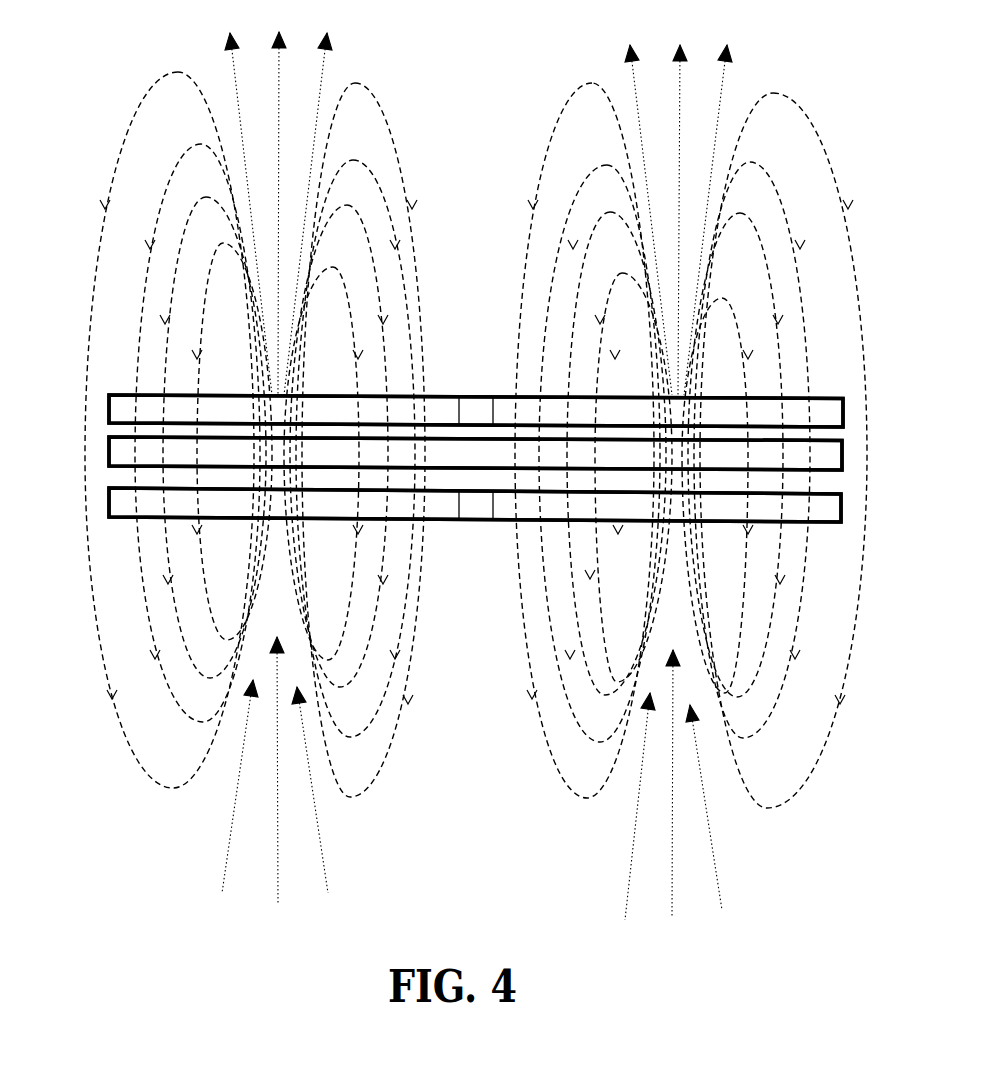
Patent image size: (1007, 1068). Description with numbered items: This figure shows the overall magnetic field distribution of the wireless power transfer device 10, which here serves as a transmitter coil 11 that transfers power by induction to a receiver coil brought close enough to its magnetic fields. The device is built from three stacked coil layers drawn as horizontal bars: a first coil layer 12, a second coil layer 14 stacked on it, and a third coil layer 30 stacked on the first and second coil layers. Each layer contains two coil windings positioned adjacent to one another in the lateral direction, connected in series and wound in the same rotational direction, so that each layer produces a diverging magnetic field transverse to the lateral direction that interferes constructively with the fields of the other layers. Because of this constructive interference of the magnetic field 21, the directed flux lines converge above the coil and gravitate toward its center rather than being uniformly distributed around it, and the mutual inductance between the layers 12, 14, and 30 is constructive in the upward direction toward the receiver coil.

The wireless power transfer device 10 is at (885, 302).
The transmitter coil 11 is at (105, 430).
The first coil layer 12 is at (850, 506).
The second coil layer 14 is at (850, 457).
The third coil layer 30 is at (848, 412).
The magnetic field 21 is at (547, 155).